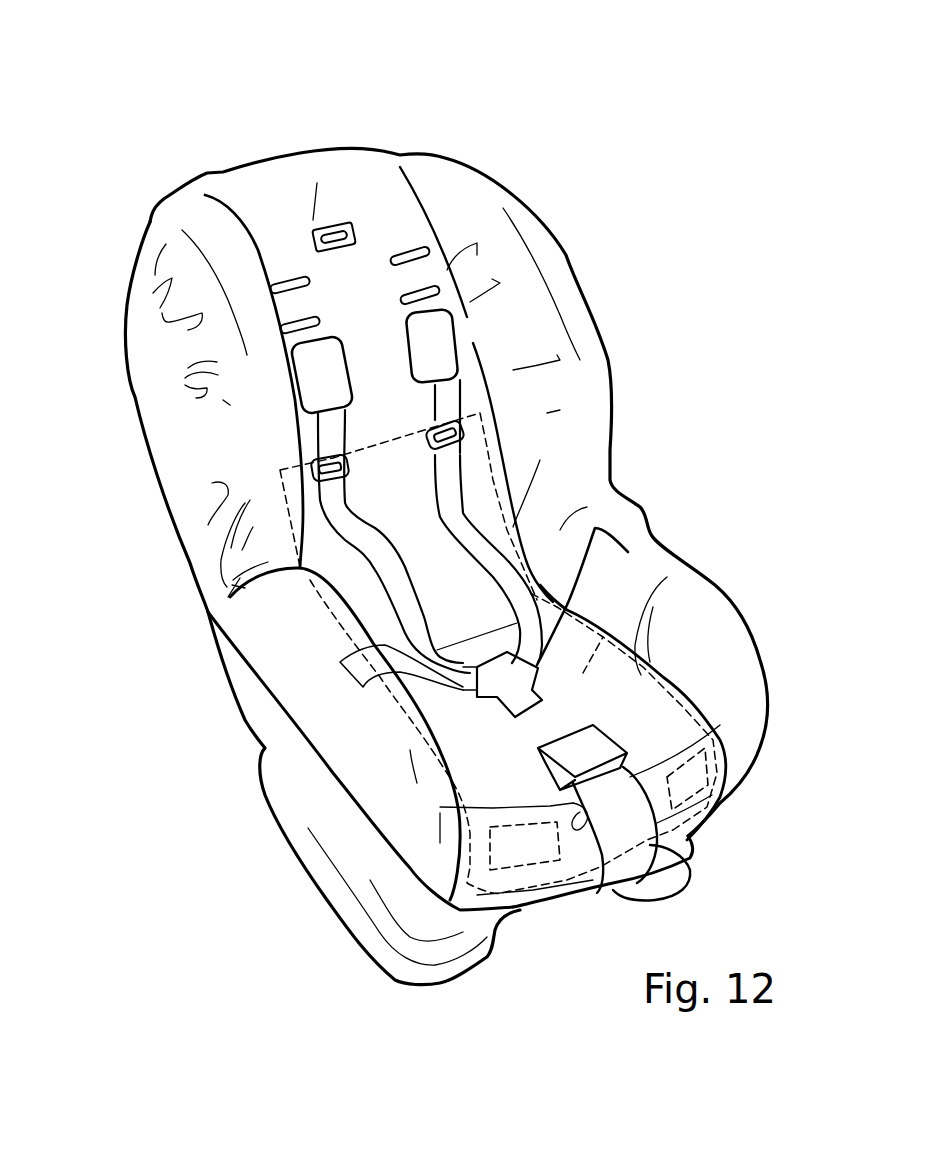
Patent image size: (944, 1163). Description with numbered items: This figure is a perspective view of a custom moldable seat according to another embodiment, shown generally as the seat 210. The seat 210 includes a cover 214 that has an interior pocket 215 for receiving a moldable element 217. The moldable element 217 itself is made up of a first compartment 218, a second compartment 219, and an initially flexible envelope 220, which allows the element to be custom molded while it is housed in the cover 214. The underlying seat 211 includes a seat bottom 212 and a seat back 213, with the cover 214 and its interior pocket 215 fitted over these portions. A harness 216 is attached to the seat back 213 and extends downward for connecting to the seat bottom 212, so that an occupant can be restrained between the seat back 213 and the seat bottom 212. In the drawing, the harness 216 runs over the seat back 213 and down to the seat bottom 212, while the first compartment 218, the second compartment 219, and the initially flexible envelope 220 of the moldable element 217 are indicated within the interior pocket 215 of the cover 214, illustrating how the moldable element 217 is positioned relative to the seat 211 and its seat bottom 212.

The seat 210 is at (283, 86).
The seat 211 is at (208, 612).
The seat bottom 212 is at (478, 767).
The seat back 213 is at (377, 191).
The cover 214 is at (187, 443).
The interior pocket 215 is at (575, 885).
The harness 216 is at (445, 368).
The moldable element 217 is at (670, 678).
The first compartment 218 is at (490, 850).
The second compartment 219 is at (722, 787).
The initially flexible envelope 220 is at (583, 673).